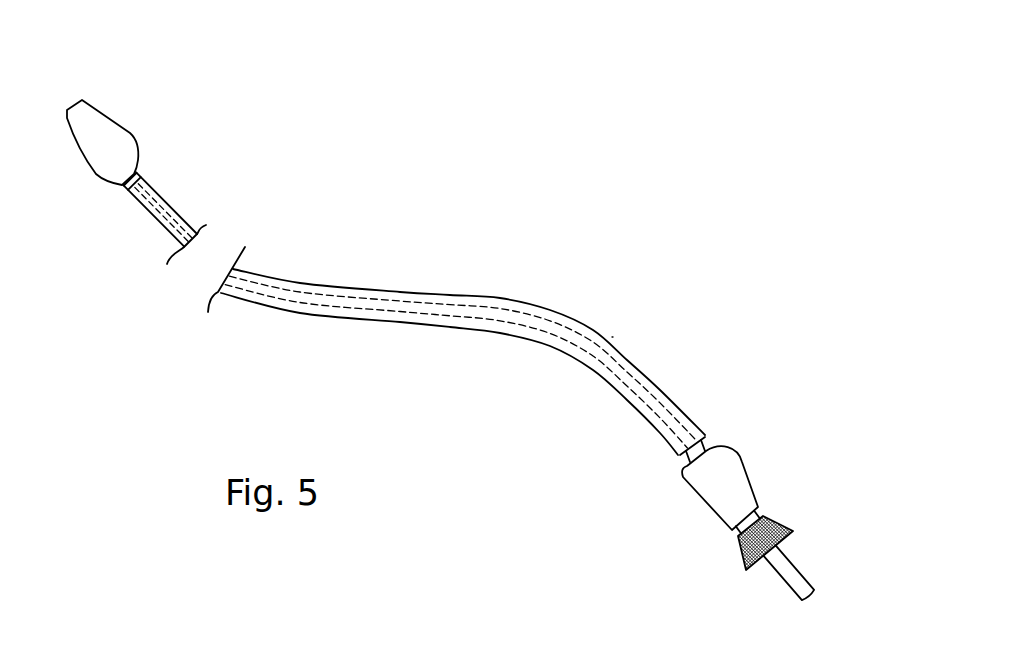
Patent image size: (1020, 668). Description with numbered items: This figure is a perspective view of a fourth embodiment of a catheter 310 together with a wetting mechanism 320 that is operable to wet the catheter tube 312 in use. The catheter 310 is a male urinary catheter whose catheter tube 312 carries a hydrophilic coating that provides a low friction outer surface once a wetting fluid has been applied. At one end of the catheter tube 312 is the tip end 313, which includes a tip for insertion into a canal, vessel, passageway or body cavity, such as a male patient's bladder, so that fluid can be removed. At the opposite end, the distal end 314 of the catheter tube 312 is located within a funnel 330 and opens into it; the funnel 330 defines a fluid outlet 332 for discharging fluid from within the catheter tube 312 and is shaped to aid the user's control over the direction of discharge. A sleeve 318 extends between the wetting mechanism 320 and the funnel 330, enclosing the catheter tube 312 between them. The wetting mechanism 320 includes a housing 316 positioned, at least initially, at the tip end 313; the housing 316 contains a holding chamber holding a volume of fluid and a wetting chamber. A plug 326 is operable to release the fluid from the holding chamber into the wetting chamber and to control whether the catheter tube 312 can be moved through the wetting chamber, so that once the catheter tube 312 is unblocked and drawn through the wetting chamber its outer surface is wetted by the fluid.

The catheter 310 is at (502, 231).
The catheter tube 312 is at (285, 309).
The tip end 313 is at (817, 600).
The distal end 314 is at (143, 173).
The housing 316 is at (750, 486).
The sleeve 318 is at (612, 337).
The wetting mechanism 320 is at (749, 450).
The plug 326 is at (744, 569).
The funnel 330 is at (95, 174).
The fluid outlet 332 is at (75, 101).